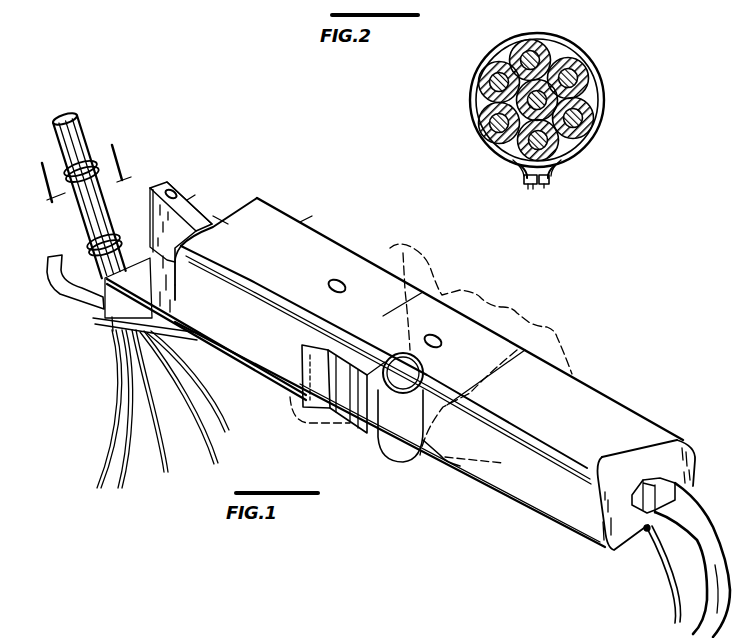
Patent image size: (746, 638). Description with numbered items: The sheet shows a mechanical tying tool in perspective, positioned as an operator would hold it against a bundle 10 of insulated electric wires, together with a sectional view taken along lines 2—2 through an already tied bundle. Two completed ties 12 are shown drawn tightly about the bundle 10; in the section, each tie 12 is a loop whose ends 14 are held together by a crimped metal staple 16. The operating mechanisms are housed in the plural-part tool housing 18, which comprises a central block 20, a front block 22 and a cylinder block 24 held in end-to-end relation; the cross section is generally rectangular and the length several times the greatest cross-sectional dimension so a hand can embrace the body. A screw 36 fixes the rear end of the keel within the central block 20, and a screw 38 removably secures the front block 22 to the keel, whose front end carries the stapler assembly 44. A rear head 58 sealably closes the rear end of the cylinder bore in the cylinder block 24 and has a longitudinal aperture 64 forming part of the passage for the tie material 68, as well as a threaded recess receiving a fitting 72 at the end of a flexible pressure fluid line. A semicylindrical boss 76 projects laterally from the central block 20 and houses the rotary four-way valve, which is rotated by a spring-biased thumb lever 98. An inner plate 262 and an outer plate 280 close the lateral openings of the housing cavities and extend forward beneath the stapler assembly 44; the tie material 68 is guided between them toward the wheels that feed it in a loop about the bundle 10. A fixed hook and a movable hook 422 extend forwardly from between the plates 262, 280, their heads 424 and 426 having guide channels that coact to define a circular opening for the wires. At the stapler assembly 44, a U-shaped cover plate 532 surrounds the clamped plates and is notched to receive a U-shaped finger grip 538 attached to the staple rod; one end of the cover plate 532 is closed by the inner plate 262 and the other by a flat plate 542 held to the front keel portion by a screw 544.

In FIG. 1, the section line 2— 2 is at (86, 185).
In FIG. 1, the bundle 10 is at (84, 121).
In FIG. 1, the tie 12 is at (64, 172).
In FIG. 2, the tie 12 is at (469, 91).
In FIG. 2, the ends 14 is at (557, 199).
In FIG. 2, the crimped metal staple 16 is at (551, 181).
In FIG. 1, the tool housing 18 is at (366, 240).
In FIG. 1, the central block 20 is at (501, 345).
In FIG. 1, the front block 22 is at (304, 223).
In FIG. 1, the cylinder block 24 is at (611, 401).
In FIG. 1, the screw 36 is at (441, 345).
In FIG. 1, the screw 38 is at (345, 290).
In FIG. 1, the stapler assembly 44 is at (229, 210).
In FIG. 1, the rear head 58 is at (594, 532).
In FIG. 1, the longitudinal aperture 64 is at (650, 536).
In FIG. 1, the tie material 68 is at (673, 601).
In FIG. 1, the fitting 72 is at (680, 483).
In FIG. 1, the semicylindrical boss 76 is at (402, 462).
In FIG. 1, the thumb lever 98 is at (302, 346).
In FIG. 1, the inner plate 262 is at (173, 297).
In FIG. 1, the outer plate 280 is at (222, 355).
In FIG. 1, the movable hook 422 is at (112, 322).
In FIG. 1, the head 424 is at (143, 217).
In FIG. 1, the head 426 is at (47, 283).
In FIG. 1, the cover plate 532 is at (185, 227).
In FIG. 1, the finger grip 538 is at (175, 276).
In FIG. 1, the flat plate 542 is at (213, 216).
In FIG. 1, the screw 544 is at (187, 200).